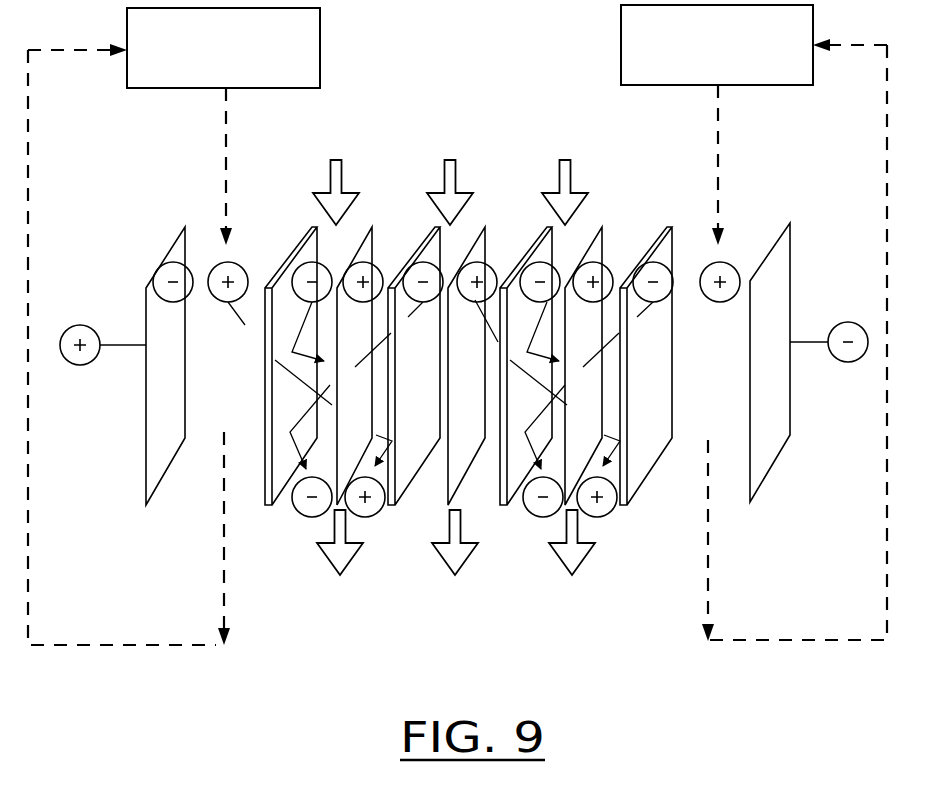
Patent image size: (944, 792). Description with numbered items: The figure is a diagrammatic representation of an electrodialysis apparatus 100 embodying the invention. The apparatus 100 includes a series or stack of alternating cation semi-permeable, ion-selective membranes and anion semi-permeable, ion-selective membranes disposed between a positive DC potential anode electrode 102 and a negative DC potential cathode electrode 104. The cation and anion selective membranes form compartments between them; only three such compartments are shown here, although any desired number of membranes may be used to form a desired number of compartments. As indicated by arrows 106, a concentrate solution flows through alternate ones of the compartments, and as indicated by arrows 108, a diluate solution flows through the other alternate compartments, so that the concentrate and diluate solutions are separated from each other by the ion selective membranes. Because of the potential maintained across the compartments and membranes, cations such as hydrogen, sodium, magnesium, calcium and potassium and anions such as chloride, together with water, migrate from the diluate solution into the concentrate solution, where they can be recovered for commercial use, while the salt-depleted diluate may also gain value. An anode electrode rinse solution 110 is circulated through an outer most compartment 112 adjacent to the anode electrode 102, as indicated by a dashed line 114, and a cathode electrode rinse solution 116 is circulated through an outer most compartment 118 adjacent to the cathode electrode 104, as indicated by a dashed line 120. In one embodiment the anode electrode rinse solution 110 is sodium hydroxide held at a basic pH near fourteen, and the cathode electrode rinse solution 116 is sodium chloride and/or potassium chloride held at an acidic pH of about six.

The electrodialysis apparatus 100 is at (482, 47).
The anode electrode 102 is at (146, 445).
The cathode electrode 104 is at (790, 400).
The arrows (concentrate solution flow) 106 is at (456, 365).
The arrows (diluate solution flow) 108 is at (452, 365).
The anode electrode rinse solution 110 is at (223, 126).
The outer most compartment (anode side) 112 is at (213, 433).
The dashed line (anode rinse circulation) 114 is at (30, 437).
The cathode electrode rinse solution 116 is at (717, 125).
The outer most compartment (cathode side) 118 is at (713, 441).
The dashed line (cathode rinse circulation) 120 is at (887, 217).